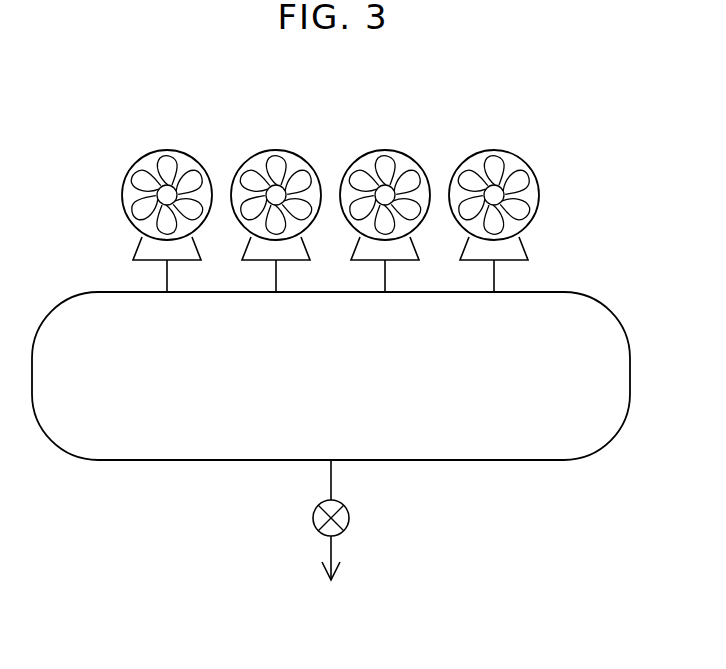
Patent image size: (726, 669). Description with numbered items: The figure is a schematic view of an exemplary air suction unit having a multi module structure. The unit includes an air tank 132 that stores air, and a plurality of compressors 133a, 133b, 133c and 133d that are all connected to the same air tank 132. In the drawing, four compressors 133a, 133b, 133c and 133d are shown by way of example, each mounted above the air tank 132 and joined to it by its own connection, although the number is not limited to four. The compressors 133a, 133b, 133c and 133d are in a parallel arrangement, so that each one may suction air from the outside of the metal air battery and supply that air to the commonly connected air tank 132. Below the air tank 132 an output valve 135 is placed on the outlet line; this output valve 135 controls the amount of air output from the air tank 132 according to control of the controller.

The compressor 133a is at (167, 150).
The compressor 133b is at (276, 150).
The compressor 133c is at (385, 150).
The compressor 133d is at (494, 150).
The air tank 132 is at (477, 461).
The output valve 135 is at (313, 522).